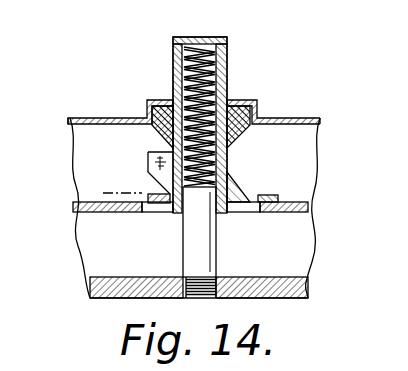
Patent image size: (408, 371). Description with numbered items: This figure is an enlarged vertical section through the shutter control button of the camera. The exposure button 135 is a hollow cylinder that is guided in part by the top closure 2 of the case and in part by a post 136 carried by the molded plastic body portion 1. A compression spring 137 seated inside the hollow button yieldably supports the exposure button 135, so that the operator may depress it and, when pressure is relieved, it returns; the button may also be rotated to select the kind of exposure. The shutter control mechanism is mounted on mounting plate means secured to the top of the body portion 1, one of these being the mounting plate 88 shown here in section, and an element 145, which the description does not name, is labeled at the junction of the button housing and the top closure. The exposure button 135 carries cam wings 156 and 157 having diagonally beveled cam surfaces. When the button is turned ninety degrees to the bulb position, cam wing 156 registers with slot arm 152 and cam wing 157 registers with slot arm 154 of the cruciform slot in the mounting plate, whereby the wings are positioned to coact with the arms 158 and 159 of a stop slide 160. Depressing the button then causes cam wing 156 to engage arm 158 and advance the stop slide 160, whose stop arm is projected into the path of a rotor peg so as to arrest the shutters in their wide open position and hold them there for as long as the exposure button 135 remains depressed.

The body portion 1 is at (310, 297).
The top closure 2 is at (311, 118).
The mounting plate 88 is at (86, 208).
The exposure button 135 is at (227, 61).
The post 136 is at (190, 252).
The compression spring 137 is at (208, 88).
The boss 145 is at (252, 107).
The slot arm 152 is at (158, 208).
The slot arm 154 is at (246, 212).
The cam wing 156 is at (157, 159).
The cam wing 157 is at (236, 190).
The arm 158 is at (150, 185).
The arm 159 is at (265, 196).
The stop slide 160 is at (103, 195).